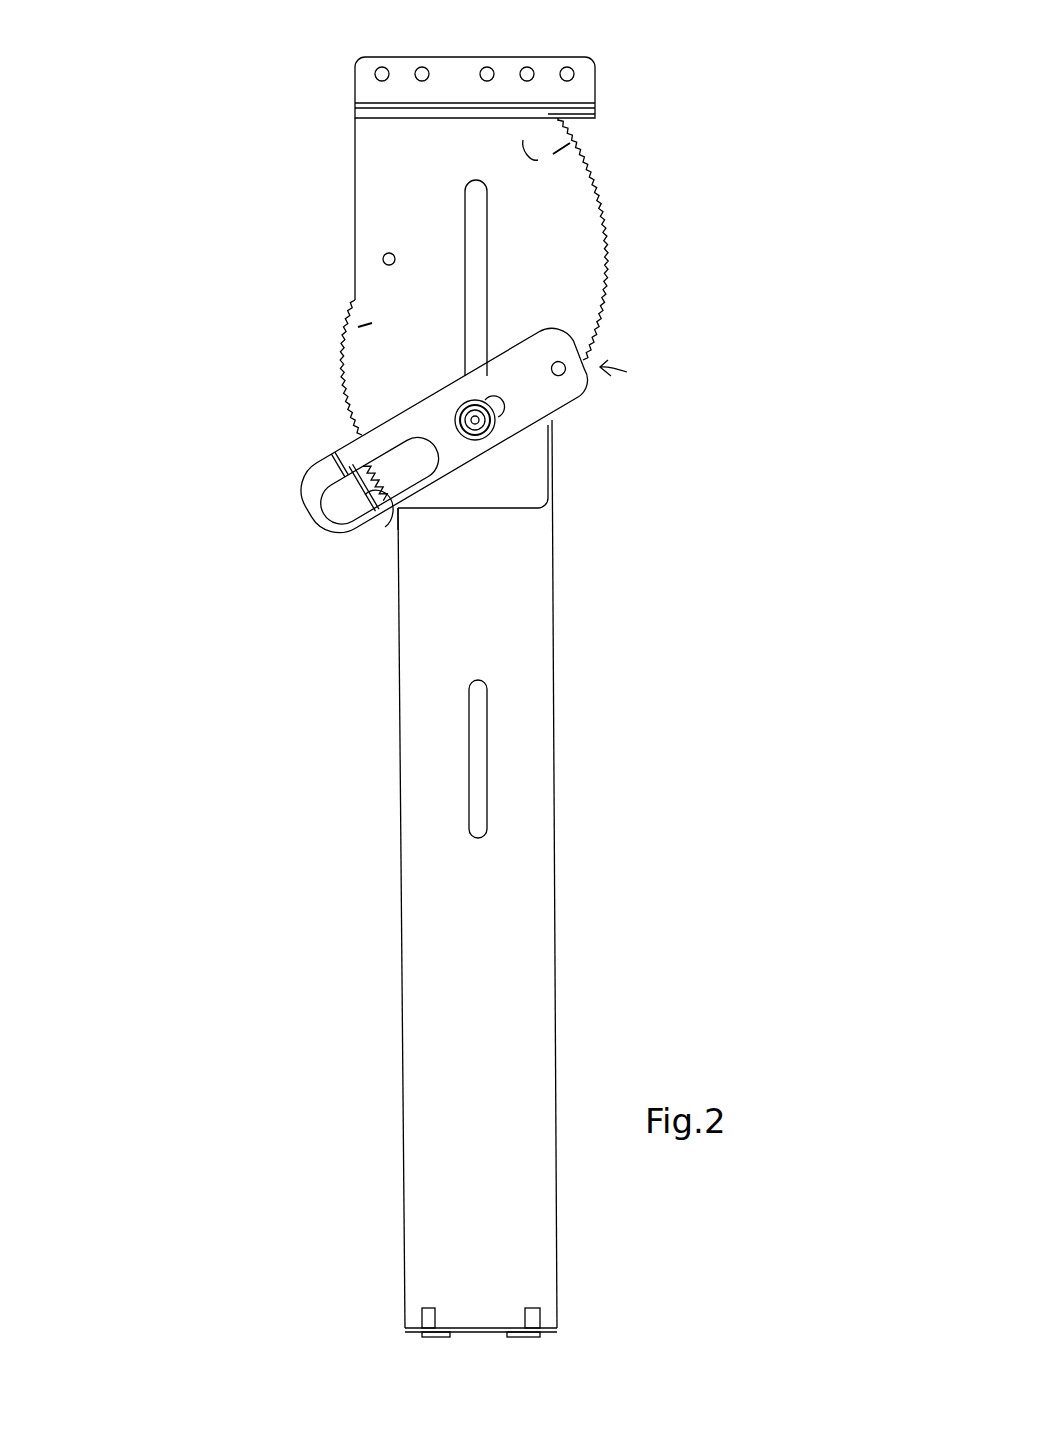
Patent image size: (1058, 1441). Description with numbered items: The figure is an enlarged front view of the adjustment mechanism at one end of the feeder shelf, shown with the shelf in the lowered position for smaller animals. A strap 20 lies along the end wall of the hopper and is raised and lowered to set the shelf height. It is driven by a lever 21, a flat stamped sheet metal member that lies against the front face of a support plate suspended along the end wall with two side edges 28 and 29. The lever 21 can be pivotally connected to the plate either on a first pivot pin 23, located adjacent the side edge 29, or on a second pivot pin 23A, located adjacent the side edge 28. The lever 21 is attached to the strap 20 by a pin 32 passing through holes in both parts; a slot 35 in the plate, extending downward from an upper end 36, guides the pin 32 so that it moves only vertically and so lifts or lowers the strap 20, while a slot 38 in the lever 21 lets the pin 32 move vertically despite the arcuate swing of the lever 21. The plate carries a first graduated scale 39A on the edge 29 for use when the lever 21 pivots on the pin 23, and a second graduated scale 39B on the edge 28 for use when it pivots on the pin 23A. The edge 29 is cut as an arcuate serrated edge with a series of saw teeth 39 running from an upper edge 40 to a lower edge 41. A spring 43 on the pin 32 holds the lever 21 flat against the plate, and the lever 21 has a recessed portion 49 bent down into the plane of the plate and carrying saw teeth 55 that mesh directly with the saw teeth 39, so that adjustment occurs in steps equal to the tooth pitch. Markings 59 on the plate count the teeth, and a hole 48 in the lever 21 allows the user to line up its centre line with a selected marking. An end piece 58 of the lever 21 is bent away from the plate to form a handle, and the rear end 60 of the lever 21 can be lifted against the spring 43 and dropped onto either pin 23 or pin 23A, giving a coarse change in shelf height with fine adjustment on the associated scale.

The strap 20 is at (553, 778).
The lever 21 is at (457, 460).
The first pivot pin 23 is at (383, 259).
The second pivot pin 23A is at (565, 374).
The side edge 28 is at (343, 340).
The side edge 29 is at (353, 182).
The pin 32 is at (477, 421).
The slot 35 is at (487, 274).
The upper end 36 is at (470, 183).
The slot 38 is at (495, 407).
The saw teeth 39 is at (605, 225).
The first graduated scale 39A is at (603, 192).
The second graduated scale 39B is at (340, 380).
The upper edge 40 is at (573, 120).
The lower edge 41 is at (645, 378).
The spring 43 is at (550, 428).
The hole 48 is at (378, 505).
The recessed portion 49 is at (372, 488).
The saw teeth 55 is at (365, 535).
The end piece 58 is at (322, 493).
The markings 59 is at (523, 140).
The rear end 60 is at (570, 405).